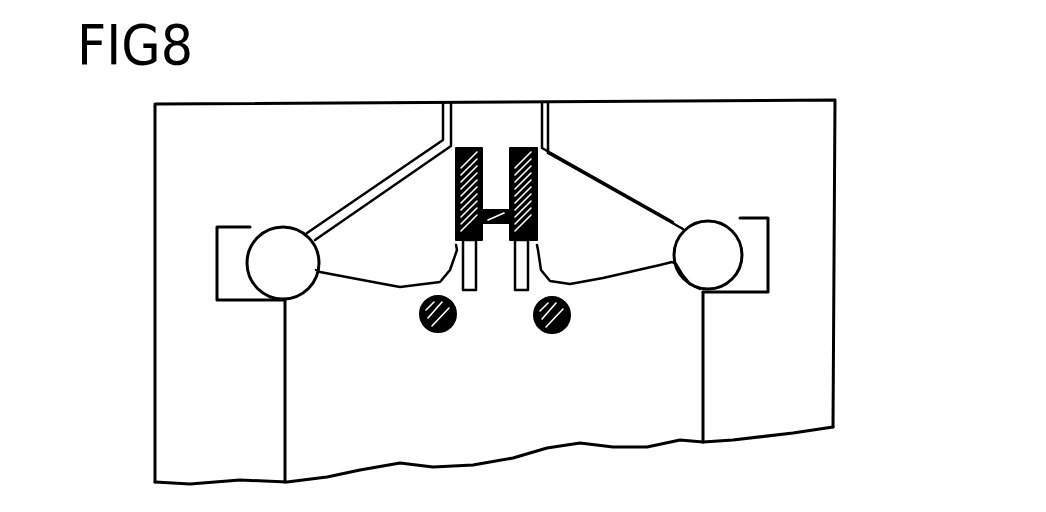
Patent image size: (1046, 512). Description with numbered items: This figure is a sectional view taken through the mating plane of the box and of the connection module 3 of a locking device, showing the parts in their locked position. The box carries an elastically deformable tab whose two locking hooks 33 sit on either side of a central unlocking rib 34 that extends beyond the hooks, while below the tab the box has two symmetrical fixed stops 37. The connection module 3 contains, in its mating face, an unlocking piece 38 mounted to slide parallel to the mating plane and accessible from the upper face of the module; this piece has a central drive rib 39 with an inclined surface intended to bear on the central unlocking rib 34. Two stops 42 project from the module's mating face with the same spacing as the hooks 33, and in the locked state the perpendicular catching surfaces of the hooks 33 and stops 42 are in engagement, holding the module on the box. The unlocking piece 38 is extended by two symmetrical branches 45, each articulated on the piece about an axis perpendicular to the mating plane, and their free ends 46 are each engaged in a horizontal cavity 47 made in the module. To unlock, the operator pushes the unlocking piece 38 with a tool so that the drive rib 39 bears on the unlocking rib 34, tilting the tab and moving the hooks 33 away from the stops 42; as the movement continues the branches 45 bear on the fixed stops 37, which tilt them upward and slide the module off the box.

The connection module 3 is at (843, 110).
The locking hooks 33 is at (540, 170).
The central unlocking rib 34 is at (540, 203).
The fixed stops 37 is at (428, 333).
The unlocking piece 38 is at (489, 140).
The central drive rib 39 is at (493, 183).
The stops 42 is at (484, 265).
The branches 45 is at (270, 250).
The free ends 46 is at (713, 265).
The cavity 47 is at (238, 270).